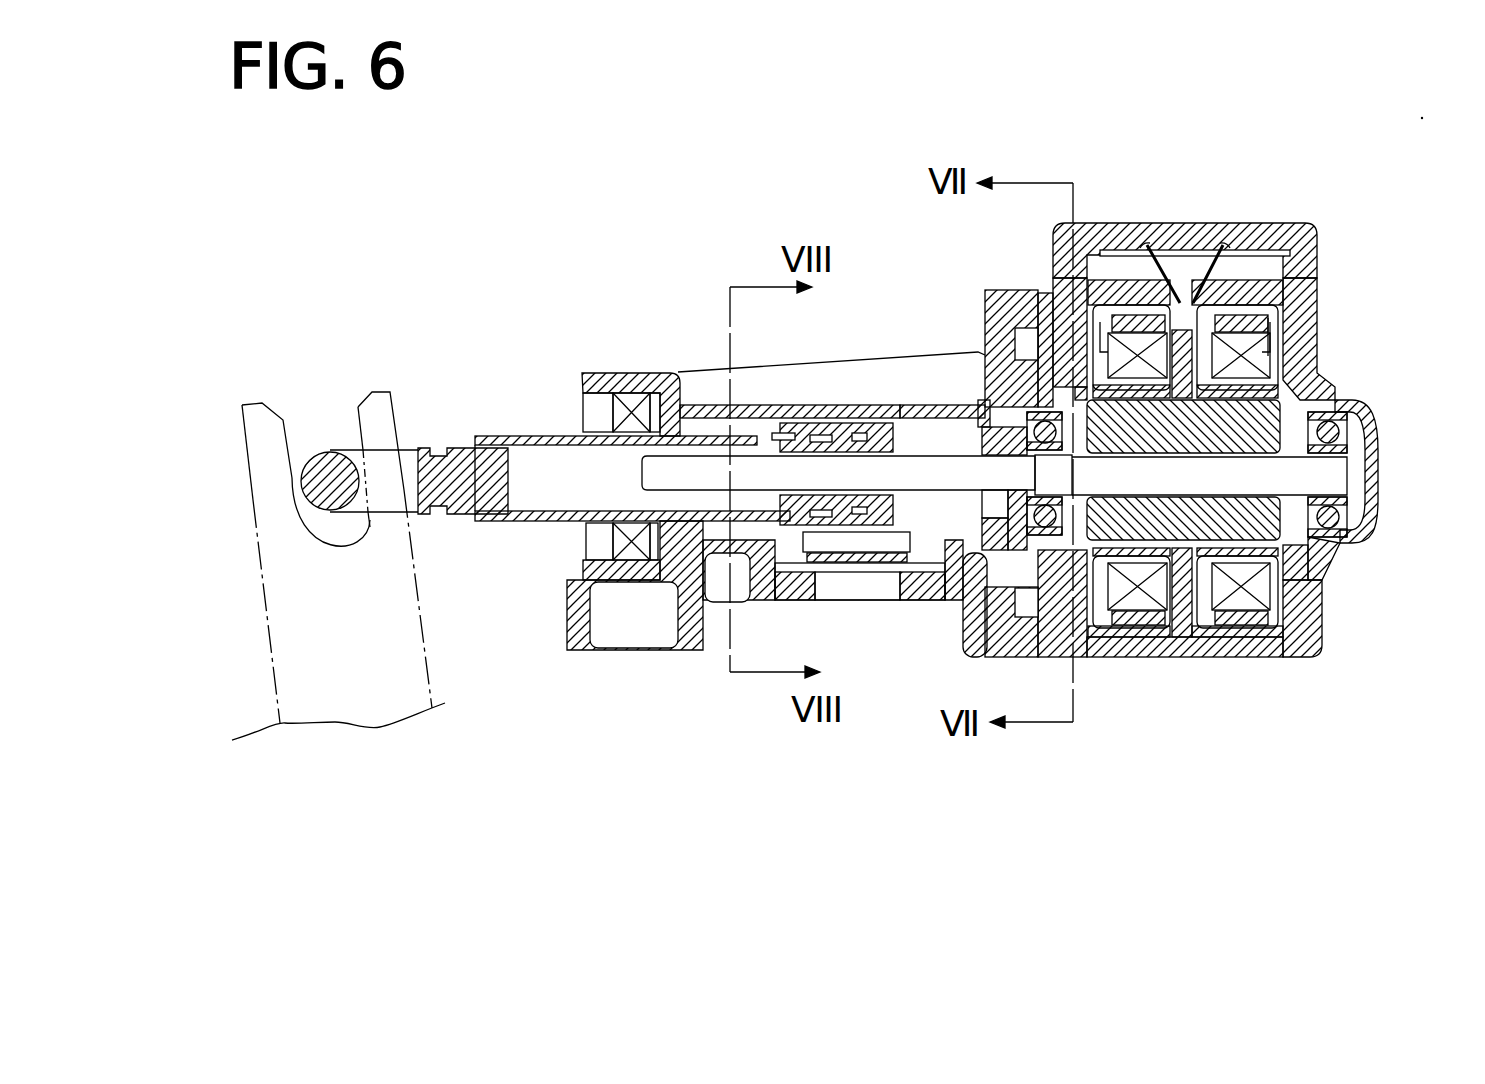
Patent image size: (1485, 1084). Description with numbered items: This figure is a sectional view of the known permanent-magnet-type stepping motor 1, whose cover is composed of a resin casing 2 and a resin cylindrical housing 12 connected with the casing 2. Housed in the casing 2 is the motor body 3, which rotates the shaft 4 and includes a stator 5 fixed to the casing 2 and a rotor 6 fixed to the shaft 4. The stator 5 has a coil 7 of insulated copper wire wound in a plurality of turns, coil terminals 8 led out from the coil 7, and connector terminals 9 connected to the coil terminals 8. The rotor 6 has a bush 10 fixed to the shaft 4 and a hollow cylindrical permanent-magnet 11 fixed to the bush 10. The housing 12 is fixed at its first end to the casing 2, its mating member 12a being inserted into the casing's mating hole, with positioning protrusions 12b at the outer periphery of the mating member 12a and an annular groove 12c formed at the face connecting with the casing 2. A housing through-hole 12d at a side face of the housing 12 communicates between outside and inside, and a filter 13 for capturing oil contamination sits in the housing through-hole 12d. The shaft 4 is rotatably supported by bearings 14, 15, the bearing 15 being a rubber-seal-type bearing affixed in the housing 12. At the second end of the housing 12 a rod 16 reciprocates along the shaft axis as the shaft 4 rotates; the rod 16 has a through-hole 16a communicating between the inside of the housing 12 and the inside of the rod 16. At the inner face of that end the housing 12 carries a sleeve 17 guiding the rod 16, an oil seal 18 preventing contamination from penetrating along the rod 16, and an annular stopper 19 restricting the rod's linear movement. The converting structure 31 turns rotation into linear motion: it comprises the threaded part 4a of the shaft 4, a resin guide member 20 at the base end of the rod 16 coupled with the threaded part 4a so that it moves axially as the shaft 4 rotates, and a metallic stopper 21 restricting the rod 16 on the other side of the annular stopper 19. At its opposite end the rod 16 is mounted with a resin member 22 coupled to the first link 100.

The permanent-magnet-type stepping motor 1 is at (1292, 210).
The resin casing 2 is at (1297, 250).
The motor body 3 is at (1297, 298).
The shaft 4 is at (1318, 478).
The threaded part 4a is at (915, 405).
The stator 5 is at (1235, 600).
The rotor 6 is at (1350, 432).
The coil 7 is at (1247, 362).
The coil terminals 8 is at (1175, 278).
The connector terminals 9 is at (1245, 250).
The bush 10 is at (1337, 562).
The hollow cylindrical permanent-magnet 11 is at (1322, 588).
The resin cylindrical housing 12 is at (617, 372).
The mating member 12a is at (1048, 385).
The positioning protrusions 12b is at (985, 655).
The annular groove 12c is at (1003, 390).
The housing through-hole 12d is at (868, 580).
The filter 13 is at (840, 572).
The bearing 14 is at (1353, 397).
The bearing 15 is at (1050, 540).
The rod 16 is at (535, 436).
The through-hole 16a is at (730, 362).
The sleeve 17 is at (583, 542).
The oil seal 18 is at (633, 545).
The annular stopper 19 is at (640, 548).
The resin guide member 20 is at (873, 455).
The metallic stopper 21 is at (945, 405).
The resin member 22 is at (438, 445).
The converting structure 31 is at (786, 425).
The first link 100 is at (378, 385).